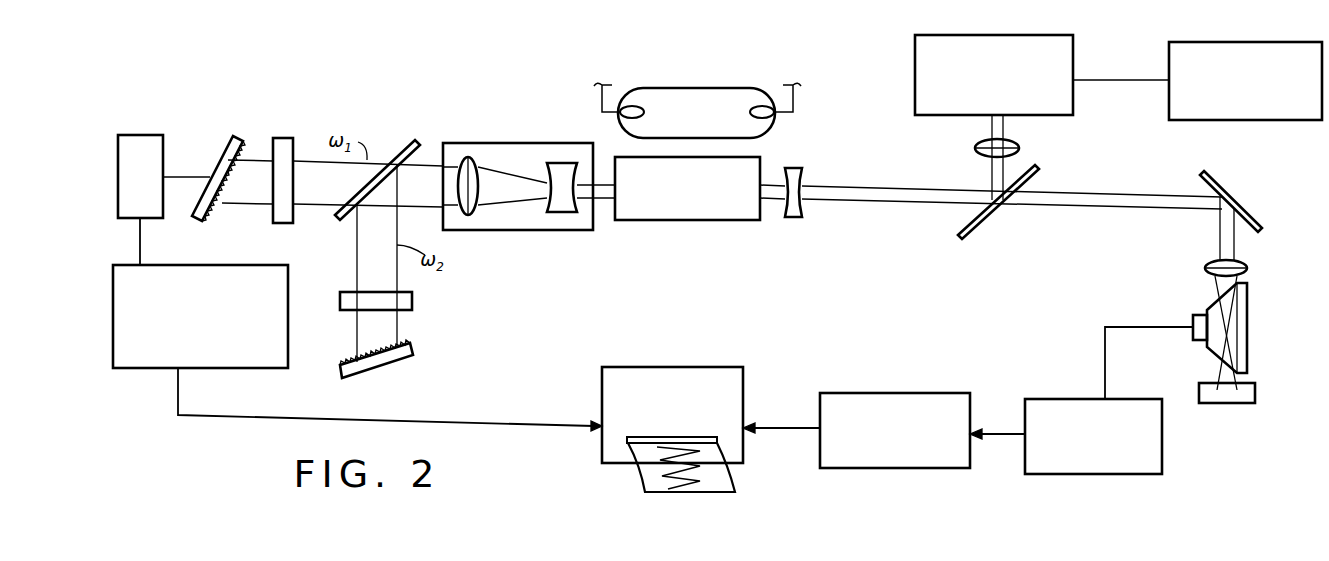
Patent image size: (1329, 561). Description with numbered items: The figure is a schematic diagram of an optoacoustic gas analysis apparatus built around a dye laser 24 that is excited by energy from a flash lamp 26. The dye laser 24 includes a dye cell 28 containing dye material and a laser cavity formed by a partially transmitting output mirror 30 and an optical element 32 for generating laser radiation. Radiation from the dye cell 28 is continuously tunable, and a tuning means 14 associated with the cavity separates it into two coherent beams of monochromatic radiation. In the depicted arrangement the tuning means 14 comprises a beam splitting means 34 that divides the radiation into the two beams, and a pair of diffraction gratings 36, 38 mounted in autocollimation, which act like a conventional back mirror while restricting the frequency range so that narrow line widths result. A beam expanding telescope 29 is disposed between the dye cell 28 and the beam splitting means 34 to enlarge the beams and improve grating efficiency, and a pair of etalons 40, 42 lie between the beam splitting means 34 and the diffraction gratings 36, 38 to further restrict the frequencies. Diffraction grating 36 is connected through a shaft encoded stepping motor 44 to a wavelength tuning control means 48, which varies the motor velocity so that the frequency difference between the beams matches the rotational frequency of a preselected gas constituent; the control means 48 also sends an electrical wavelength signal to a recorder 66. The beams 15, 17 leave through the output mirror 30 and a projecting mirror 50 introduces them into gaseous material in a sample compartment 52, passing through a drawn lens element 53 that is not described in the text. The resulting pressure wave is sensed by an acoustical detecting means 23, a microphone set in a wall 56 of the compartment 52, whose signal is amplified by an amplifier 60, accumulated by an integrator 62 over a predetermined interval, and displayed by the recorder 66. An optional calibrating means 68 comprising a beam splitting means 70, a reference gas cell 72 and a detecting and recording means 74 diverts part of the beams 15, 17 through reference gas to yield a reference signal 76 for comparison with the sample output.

The tuning means 14 is at (488, 327).
The coherent beam of monochromatic radiation 15 is at (1012, 218).
The coherent beam of monochromatic radiation 17 is at (897, 207).
The acoustical detecting means 23 is at (1193, 311).
The dye laser 24 is at (648, 260).
The flash lamp 26 is at (732, 97).
The dye cell 28 is at (693, 213).
The beam expanding telescope 29 is at (540, 128).
The output mirror 30 is at (797, 218).
The optical element 32 is at (217, 160).
The beam splitting means 34 is at (398, 157).
The diffraction grating 36 is at (213, 203).
The diffraction grating 38 is at (405, 343).
The etalon 40 is at (350, 296).
The etalon 42 is at (288, 147).
The shaft encoded stepping motor 44 is at (145, 145).
The wavelength tuning control means 48 is at (142, 362).
The mirror 50 is at (1218, 182).
The sample compartment 52 is at (1233, 327).
The focusing lens 53 is at (1245, 270).
The wall 56 is at (1247, 348).
The amplifier 60 is at (1160, 446).
The integrator 62 is at (940, 398).
The recorder 66 is at (737, 382).
The calibrating means 68 is at (920, 144).
The beam splitting means 70 is at (970, 234).
The reference gas cell 72 is at (1048, 44).
The detecting and recording means 74 is at (1205, 47).
The reference signal 76 is at (1128, 85).